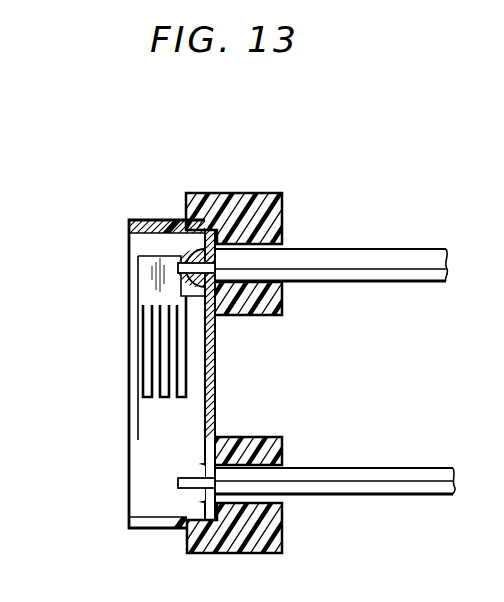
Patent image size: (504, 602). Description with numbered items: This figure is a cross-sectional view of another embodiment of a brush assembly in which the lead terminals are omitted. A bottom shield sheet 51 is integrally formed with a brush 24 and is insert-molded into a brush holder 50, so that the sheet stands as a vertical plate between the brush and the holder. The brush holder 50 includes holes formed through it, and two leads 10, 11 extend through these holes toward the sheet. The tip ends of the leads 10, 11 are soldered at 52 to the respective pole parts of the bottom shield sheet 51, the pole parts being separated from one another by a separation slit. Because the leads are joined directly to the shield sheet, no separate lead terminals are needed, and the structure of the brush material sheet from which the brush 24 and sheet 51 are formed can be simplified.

The brush holder 50 is at (227, 200).
The bottom shield sheet 51 is at (205, 443).
The soldered joint 52 is at (196, 252).
The brush 24 is at (158, 287).
The lead 10 is at (345, 262).
The lead 11 is at (367, 482).